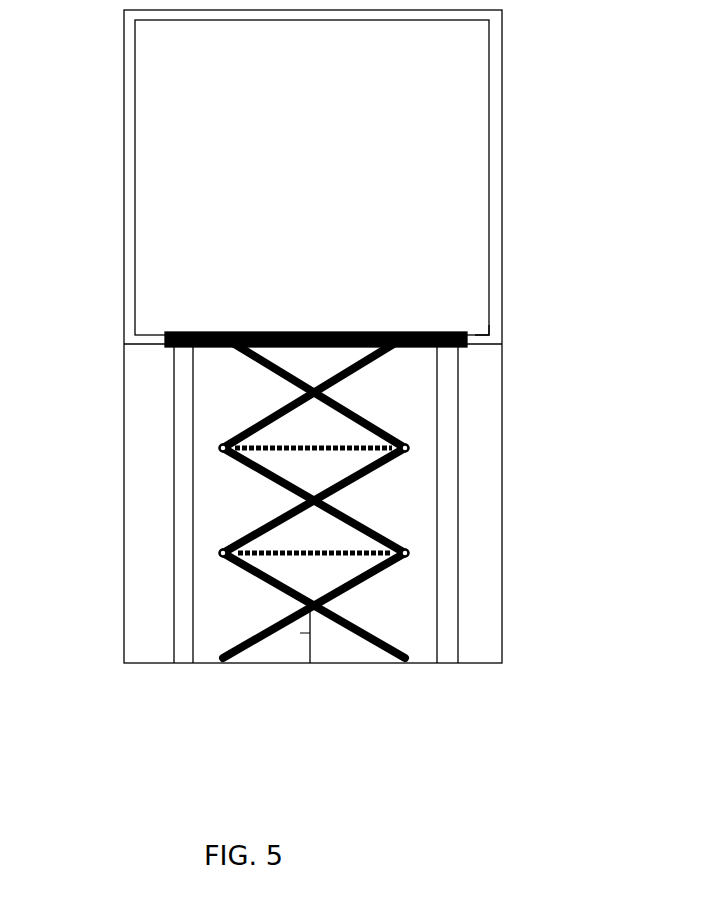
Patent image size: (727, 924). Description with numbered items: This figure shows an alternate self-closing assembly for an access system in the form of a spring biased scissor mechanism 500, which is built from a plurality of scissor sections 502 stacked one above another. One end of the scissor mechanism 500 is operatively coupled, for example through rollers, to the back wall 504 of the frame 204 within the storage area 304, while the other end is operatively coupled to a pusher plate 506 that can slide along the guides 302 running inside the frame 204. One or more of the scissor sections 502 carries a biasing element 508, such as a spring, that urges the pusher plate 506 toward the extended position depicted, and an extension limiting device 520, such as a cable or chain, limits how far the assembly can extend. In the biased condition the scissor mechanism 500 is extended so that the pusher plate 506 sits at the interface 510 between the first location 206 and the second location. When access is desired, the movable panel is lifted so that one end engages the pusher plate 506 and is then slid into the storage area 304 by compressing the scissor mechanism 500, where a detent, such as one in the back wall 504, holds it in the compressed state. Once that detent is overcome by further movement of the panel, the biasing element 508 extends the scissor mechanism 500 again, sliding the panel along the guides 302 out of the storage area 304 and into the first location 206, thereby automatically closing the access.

The frame 204 is at (497, 92).
The first location 206 is at (298, 152).
The guide 302 is at (182, 645).
The storage area 304 is at (152, 410).
The scissor mechanism 500 is at (410, 486).
The scissor section 502 is at (365, 603).
The back wall 504 is at (320, 647).
The pusher plate 506 is at (306, 332).
The biasing element 508 is at (330, 448).
The interface 510 is at (480, 330).
The extension limiting device 520 is at (305, 633).